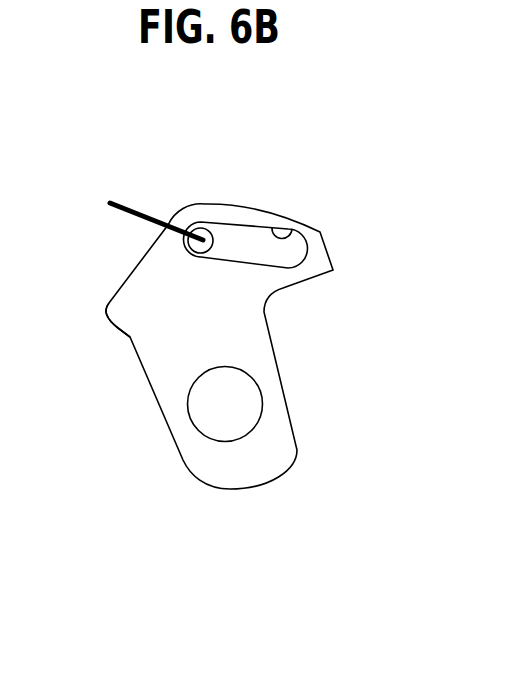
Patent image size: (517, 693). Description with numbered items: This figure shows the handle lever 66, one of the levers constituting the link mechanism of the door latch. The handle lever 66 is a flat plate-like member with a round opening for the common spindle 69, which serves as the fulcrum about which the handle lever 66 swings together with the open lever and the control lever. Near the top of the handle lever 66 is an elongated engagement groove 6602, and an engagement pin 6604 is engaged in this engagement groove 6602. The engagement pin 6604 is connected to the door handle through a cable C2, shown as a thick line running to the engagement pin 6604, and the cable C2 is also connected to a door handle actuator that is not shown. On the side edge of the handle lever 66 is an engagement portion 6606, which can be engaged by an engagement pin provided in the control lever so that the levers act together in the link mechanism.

The handle lever 66 is at (207, 203).
The engagement pin 6604 is at (212, 232).
The engagement groove 6602 is at (292, 237).
The cable C2 is at (127, 215).
The engagement portion 6606 is at (117, 328).
The common spindle 69 is at (193, 425).